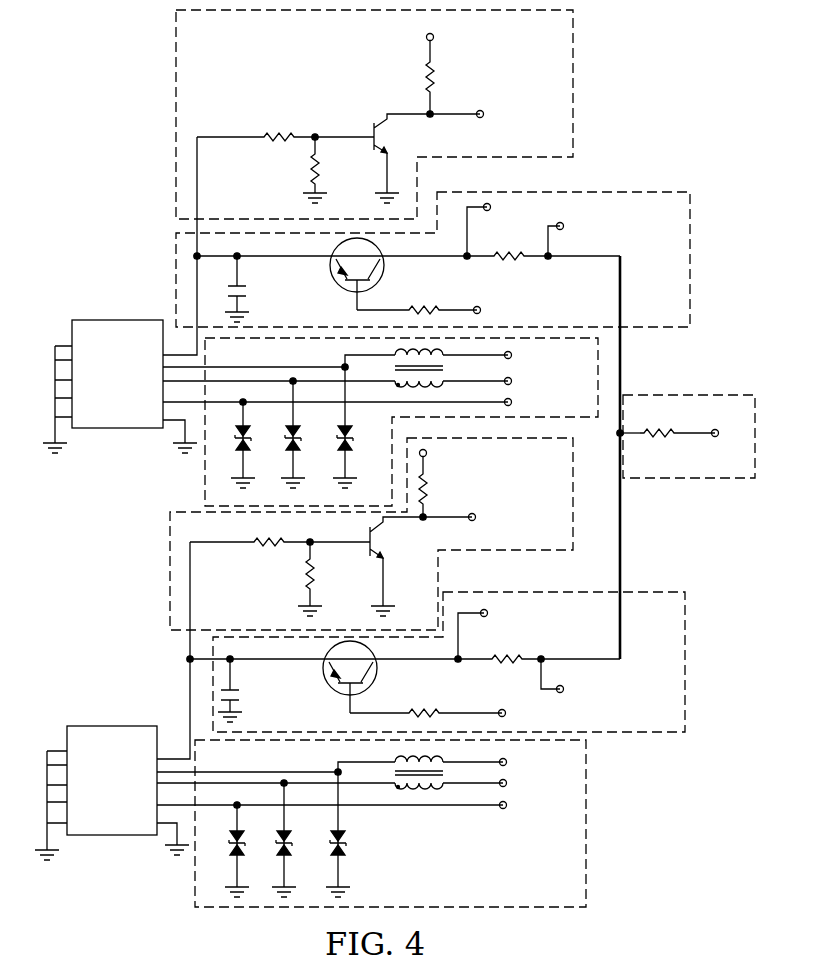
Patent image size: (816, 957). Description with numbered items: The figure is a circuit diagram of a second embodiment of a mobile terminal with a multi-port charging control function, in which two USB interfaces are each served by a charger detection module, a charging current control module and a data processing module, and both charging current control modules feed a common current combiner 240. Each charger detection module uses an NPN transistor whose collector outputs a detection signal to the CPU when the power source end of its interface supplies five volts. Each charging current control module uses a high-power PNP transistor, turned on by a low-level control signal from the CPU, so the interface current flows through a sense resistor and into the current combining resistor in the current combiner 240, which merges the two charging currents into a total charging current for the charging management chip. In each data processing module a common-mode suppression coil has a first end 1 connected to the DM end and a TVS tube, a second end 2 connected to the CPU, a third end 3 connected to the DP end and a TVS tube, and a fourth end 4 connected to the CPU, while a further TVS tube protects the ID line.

The current combiner 240 is at (656, 394).
The first end of the common-mode suppression coil 1 is at (395, 760).
The second end of the common-mode suppression coil 2 is at (443, 760).
The third end of the common-mode suppression coil 3 is at (398, 786).
The fourth end of the common-mode suppression coil 4 is at (441, 787).